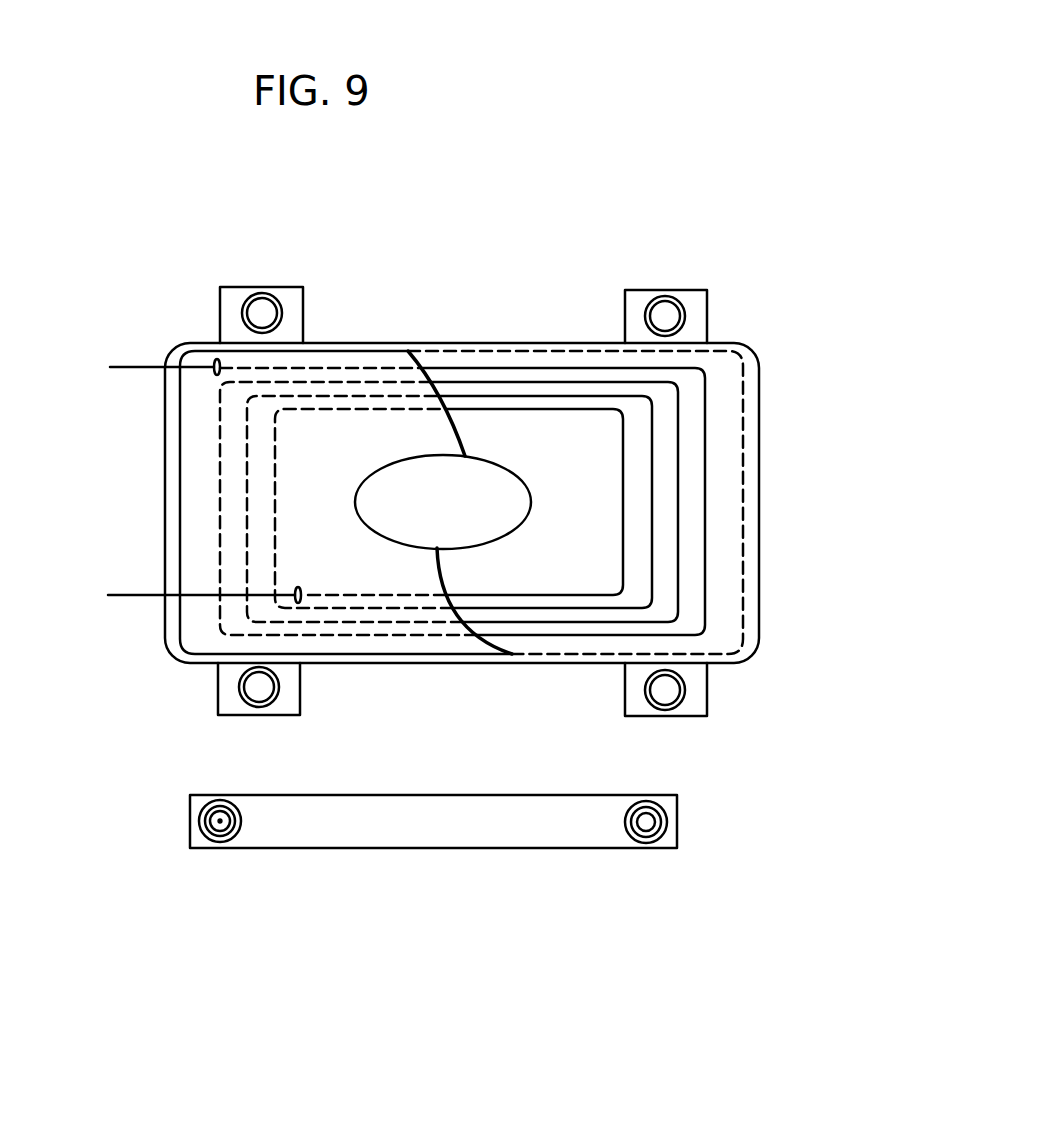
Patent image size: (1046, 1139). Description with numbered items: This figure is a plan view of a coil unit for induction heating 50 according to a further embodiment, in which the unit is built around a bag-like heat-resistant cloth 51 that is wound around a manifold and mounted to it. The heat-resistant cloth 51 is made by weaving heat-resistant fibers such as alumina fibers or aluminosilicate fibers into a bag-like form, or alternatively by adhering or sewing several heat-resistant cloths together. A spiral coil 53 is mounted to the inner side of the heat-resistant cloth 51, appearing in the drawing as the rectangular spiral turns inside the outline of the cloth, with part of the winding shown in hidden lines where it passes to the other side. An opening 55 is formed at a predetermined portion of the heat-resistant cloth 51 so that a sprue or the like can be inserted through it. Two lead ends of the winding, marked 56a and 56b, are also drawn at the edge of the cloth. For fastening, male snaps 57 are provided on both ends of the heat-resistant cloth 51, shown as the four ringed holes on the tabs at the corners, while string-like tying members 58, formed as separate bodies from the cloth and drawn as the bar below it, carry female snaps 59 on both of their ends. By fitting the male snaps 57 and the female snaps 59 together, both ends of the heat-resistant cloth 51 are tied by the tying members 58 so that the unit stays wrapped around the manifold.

The coil unit for induction heating 50 is at (604, 205).
The heat-resistant cloth 51 is at (760, 397).
The spiral coil 53 is at (705, 503).
The opening 55 is at (437, 453).
The terminal 56a is at (216, 360).
The terminal 56b is at (298, 587).
The male snap 57 is at (262, 292).
The tying member 58 is at (407, 848).
The female snap 59 is at (220, 842).